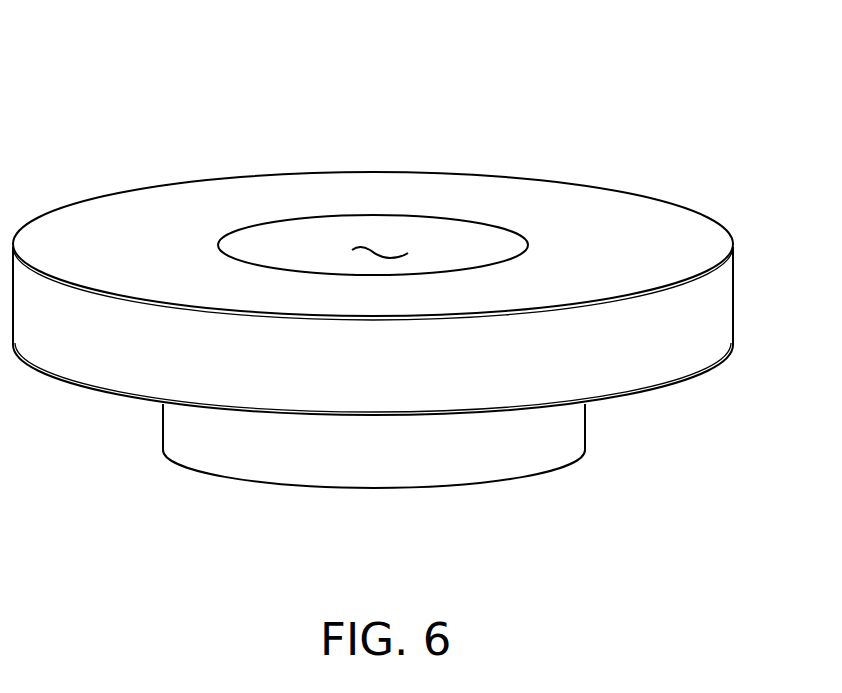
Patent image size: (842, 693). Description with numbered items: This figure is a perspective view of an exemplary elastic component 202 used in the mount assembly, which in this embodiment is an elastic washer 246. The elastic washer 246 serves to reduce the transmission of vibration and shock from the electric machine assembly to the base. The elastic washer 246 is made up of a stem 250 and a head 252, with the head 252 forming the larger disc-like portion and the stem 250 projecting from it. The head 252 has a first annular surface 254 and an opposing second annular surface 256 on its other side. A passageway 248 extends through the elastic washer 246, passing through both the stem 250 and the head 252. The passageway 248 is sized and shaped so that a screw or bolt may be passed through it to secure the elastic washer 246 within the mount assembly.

The elastic component 202 is at (305, 115).
The elastic washer 246 is at (113, 235).
The passageway 248 is at (385, 255).
The stem 250 is at (503, 443).
The head 252 is at (658, 337).
The first annular surface 254 is at (585, 237).
The second annular surface 256 is at (98, 418).